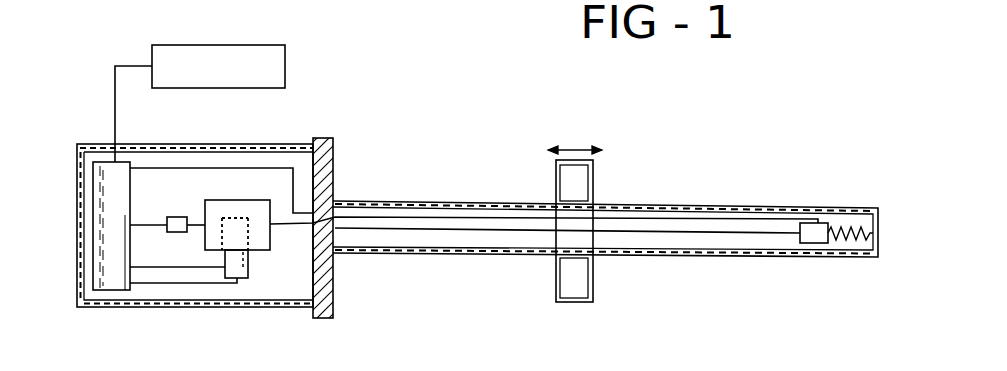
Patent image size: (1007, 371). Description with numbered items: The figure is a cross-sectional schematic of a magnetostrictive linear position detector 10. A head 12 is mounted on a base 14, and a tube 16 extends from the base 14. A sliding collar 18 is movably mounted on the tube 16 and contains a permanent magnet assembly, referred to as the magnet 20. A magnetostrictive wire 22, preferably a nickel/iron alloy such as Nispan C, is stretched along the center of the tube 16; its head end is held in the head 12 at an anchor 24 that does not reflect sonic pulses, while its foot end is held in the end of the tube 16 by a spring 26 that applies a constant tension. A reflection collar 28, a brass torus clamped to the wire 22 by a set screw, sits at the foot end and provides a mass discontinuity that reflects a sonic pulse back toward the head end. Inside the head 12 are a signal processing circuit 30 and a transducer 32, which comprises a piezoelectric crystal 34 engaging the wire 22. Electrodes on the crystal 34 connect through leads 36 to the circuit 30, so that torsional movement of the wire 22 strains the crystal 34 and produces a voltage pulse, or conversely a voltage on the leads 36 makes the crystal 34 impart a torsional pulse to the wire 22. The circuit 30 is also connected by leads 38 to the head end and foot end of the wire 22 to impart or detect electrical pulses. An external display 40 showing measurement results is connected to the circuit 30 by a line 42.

The magnetostrictive linear position detector 10 is at (708, 197).
The head 12 is at (88, 143).
The base 14 is at (337, 158).
The tube 16 is at (468, 202).
The sliding collar 18 is at (603, 193).
The magnet 20 is at (572, 277).
The magnetostrictive wire 22 is at (628, 233).
The anchor 24 is at (177, 217).
The spring 26 is at (851, 228).
The reflection collar 28 is at (815, 235).
The signal processing circuit 30 is at (107, 239).
The transducer 32 is at (229, 200).
The piezoelectric crystal 34 is at (248, 271).
The leads 36 is at (193, 284).
The leads 38 is at (198, 168).
The external display 40 is at (287, 66).
The line 42 is at (113, 82).